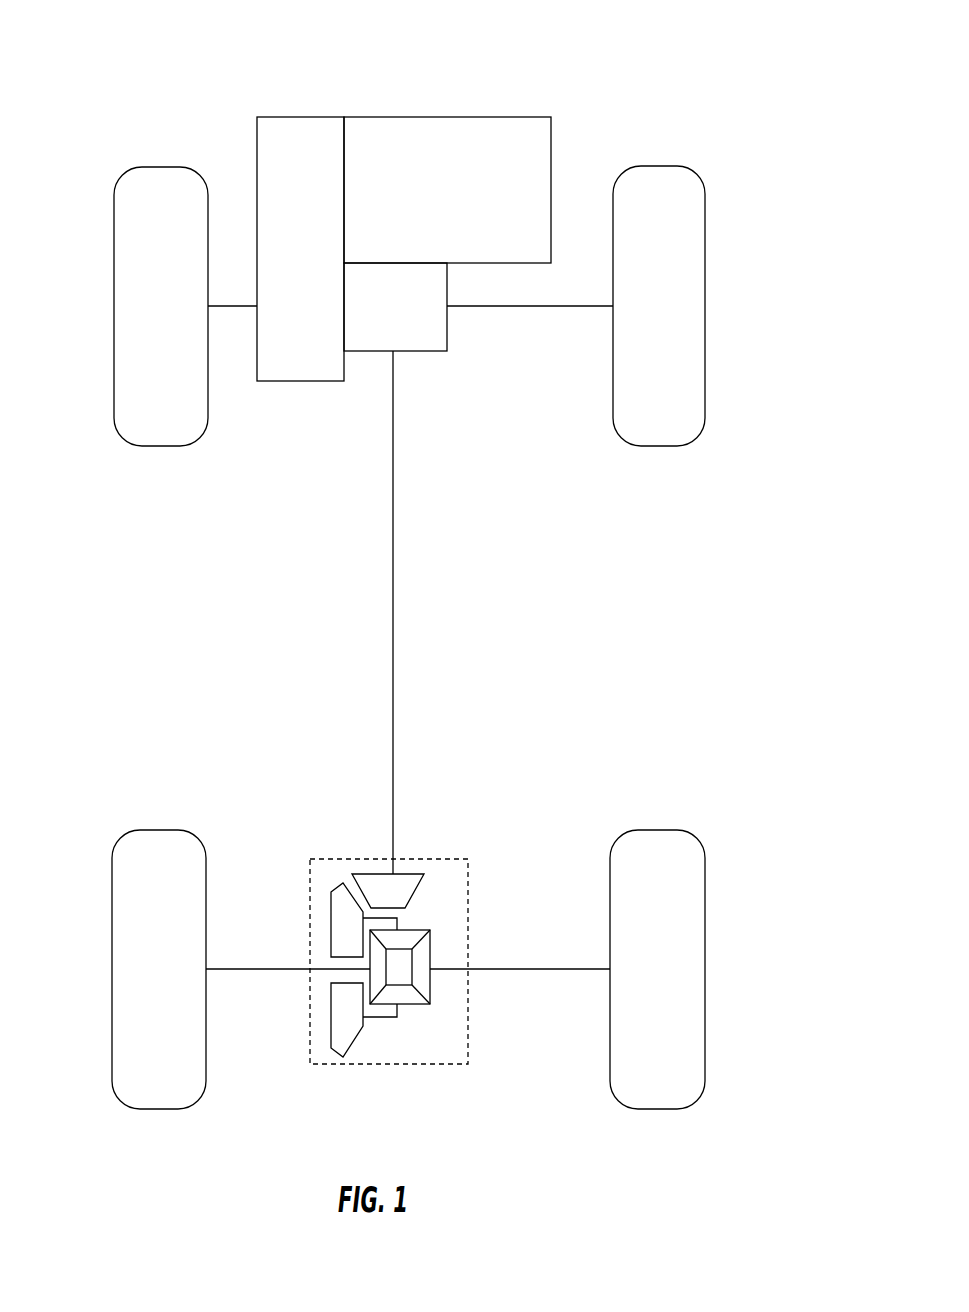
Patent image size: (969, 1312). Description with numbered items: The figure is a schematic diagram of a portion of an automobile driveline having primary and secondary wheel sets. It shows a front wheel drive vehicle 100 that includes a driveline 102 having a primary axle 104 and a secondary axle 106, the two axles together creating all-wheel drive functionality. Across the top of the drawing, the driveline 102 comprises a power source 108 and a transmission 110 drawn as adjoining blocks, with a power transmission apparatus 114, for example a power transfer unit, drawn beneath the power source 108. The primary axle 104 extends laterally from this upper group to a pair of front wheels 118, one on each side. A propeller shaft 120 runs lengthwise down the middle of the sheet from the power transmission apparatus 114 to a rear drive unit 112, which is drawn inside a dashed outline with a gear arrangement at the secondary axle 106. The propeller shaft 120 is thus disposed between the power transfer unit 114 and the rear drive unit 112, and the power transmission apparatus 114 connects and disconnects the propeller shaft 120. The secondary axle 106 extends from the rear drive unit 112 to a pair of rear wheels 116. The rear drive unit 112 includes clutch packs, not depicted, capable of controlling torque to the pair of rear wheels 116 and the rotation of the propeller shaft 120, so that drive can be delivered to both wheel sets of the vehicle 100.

The front wheel drive vehicle 100 is at (538, 87).
The driveline 102 is at (526, 612).
The primary axle 104 is at (555, 307).
The secondary axle 106 is at (524, 968).
The power source 108 is at (545, 162).
The transmission 110 is at (263, 157).
The rear drive unit 112 is at (402, 1037).
The power transmission apparatus 114 is at (380, 342).
The pair of rear wheels 116 is at (118, 928).
The pair of front wheels 118 is at (120, 235).
The propeller shaft 120 is at (390, 596).